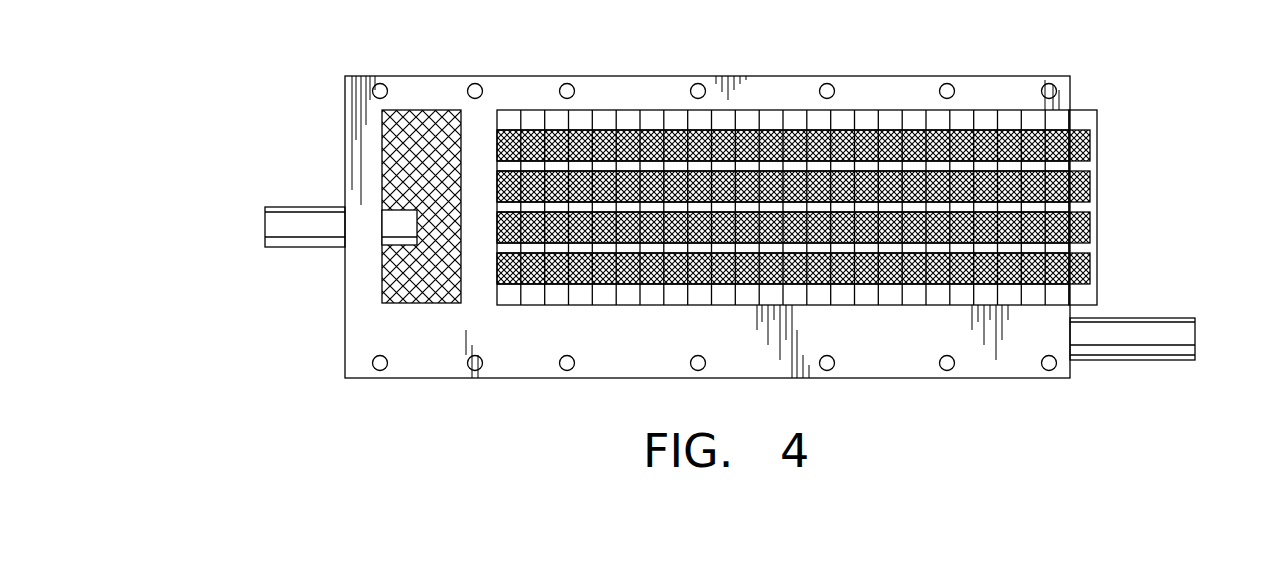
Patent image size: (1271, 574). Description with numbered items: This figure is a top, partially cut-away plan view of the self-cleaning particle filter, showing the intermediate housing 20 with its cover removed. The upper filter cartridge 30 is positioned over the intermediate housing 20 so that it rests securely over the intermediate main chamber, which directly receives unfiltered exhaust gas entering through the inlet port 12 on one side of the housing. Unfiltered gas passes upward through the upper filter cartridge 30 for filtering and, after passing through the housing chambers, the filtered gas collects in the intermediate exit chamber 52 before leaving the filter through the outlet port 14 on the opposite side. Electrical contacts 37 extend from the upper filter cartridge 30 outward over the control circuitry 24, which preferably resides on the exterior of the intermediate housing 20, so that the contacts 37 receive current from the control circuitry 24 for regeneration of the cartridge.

The inlet port 12 is at (1157, 343).
The outlet port 14 is at (292, 215).
The intermediate housing 20 is at (863, 88).
The control circuitry 24 is at (1097, 112).
The upper filter cartridge 30 is at (648, 102).
The electrical contacts 37 is at (1090, 152).
The intermediate exit chamber 52 is at (412, 140).